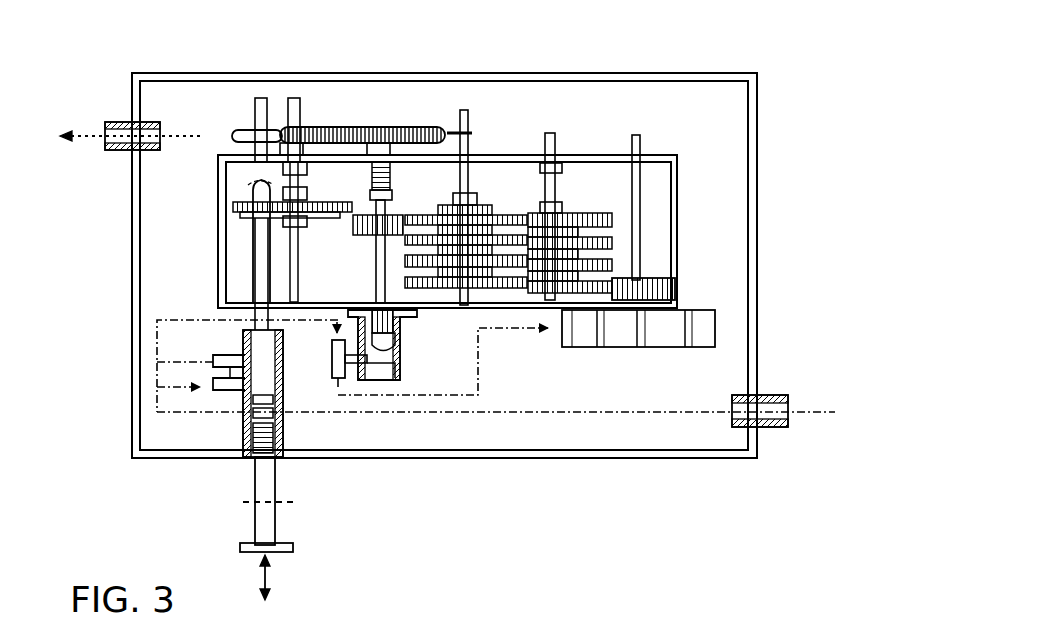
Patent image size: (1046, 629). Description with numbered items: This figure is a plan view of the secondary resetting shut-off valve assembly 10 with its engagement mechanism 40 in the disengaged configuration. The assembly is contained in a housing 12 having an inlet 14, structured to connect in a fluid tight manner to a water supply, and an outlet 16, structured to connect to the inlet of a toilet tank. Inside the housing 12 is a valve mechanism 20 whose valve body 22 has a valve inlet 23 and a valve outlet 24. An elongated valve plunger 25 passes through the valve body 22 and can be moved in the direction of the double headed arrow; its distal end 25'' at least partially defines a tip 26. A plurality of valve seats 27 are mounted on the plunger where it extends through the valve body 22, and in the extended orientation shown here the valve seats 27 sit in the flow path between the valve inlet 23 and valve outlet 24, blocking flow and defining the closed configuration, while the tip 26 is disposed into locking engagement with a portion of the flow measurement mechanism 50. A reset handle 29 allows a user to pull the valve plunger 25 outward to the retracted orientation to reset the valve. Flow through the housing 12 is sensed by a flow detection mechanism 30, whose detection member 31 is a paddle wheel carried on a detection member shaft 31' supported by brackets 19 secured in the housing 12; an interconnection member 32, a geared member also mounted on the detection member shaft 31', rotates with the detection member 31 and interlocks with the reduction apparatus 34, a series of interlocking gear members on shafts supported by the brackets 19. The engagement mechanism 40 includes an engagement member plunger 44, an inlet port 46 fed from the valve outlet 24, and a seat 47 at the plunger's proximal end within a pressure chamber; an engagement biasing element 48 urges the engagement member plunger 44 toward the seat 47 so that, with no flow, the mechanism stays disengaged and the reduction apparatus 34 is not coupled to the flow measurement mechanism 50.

The secondary resetting shut-off valve assembly 10 is at (500, 530).
The housing 12 is at (685, 458).
The inlet 14 is at (790, 400).
The outlet 16 is at (106, 147).
The brackets 19 is at (660, 152).
The valve mechanism 20 is at (240, 468).
The valve body 22 is at (280, 428).
The valve inlet 23 is at (232, 415).
The valve outlet 24 is at (212, 372).
The valve plunger 25 is at (305, 501).
The distal end 25'' is at (169, 255).
The tip 26 is at (247, 187).
The valve seat 27 is at (130, 326).
The reset handle 29 is at (295, 549).
The flow detection mechanism 30 is at (702, 297).
The detection member 31 is at (685, 332).
The detection member shaft 31' is at (725, 207).
The interconnection member 32 is at (677, 272).
The reduction apparatus 34 is at (517, 140).
The engagement mechanism 40 is at (412, 370).
The engagement member plunger 44 is at (352, 268).
The inlet port 46 is at (334, 355).
The seat 47 is at (402, 347).
The engagement biasing element 48 is at (393, 183).
The flow measurement mechanism 50 is at (323, 123).